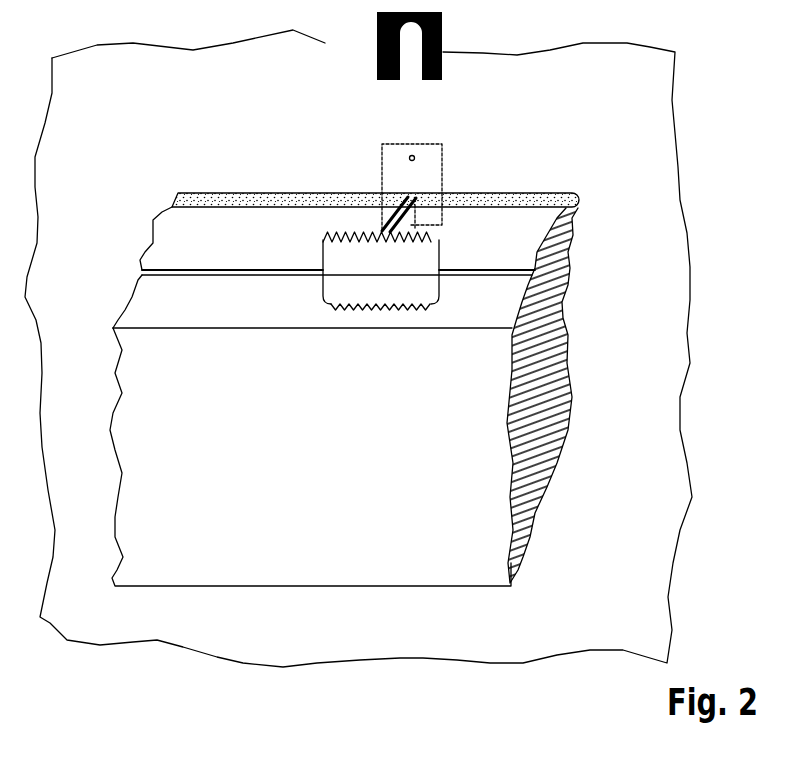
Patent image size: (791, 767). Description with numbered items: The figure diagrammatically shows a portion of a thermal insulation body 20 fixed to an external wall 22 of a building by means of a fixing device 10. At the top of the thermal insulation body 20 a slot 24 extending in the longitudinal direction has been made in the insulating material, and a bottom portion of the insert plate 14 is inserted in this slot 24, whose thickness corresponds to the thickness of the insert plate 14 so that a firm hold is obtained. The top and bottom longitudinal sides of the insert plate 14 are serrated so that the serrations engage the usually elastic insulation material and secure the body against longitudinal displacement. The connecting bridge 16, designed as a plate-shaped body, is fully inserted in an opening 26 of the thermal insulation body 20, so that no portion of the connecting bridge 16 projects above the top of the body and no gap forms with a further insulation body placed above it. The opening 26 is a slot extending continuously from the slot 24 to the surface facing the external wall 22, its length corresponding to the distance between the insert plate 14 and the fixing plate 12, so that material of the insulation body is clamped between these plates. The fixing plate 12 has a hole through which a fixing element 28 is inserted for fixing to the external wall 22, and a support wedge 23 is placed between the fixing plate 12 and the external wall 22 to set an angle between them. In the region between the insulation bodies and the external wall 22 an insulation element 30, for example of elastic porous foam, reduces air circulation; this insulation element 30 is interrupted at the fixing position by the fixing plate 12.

The fixing device 10 is at (460, 163).
The fixing plate 12 is at (388, 163).
The insert plate 14 is at (330, 253).
The connecting bridge 16 is at (388, 208).
The thermal insulation body 20 is at (553, 473).
The external wall 22 is at (608, 111).
The support wedge 23 is at (373, 52).
The slot 24 is at (165, 268).
The opening 26 is at (400, 220).
The fixing element 28 is at (412, 155).
The insulation element 30 is at (205, 200).